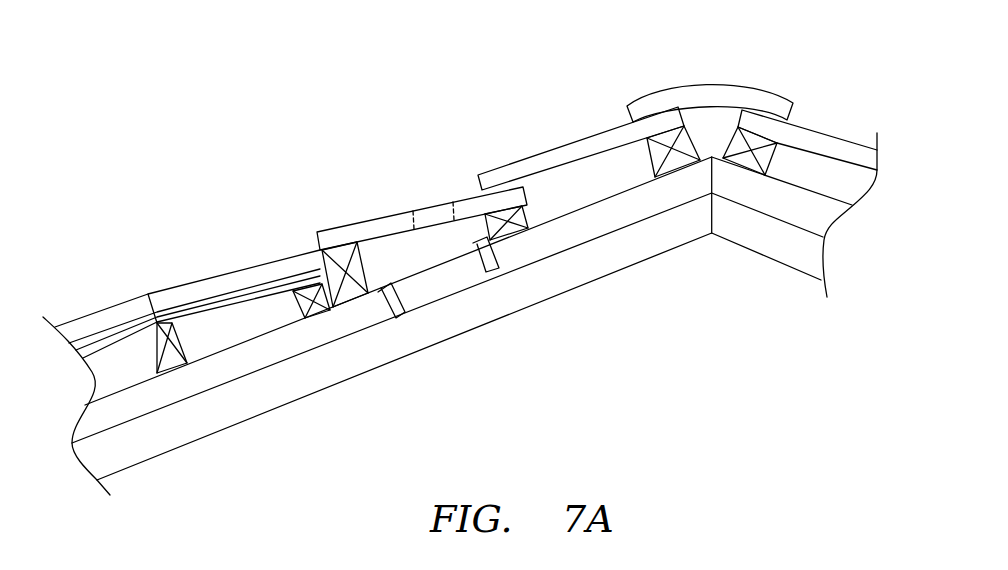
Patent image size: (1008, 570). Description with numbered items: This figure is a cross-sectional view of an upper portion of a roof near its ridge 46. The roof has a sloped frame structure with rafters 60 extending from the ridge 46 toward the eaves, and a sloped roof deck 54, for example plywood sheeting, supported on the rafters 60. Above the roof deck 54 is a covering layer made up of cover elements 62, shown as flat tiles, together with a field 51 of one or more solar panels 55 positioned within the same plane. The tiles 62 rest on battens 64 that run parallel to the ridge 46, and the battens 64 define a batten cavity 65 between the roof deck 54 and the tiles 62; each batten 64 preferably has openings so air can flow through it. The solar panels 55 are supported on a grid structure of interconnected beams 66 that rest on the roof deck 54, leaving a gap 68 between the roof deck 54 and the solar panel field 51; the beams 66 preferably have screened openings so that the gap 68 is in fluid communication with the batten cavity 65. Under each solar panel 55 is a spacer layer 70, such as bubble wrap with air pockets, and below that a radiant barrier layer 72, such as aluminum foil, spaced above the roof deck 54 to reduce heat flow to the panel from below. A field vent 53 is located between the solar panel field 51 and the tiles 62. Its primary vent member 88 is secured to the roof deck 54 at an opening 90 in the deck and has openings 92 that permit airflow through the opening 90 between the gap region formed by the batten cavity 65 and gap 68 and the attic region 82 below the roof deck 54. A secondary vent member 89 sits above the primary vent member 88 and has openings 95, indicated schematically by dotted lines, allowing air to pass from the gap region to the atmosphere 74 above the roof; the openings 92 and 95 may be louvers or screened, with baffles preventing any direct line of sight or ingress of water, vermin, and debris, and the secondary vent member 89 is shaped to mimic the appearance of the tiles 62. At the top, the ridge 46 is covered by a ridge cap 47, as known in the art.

The ridge 46 is at (682, 95).
The ridge cap 47 is at (744, 98).
The field of solar panels 51 is at (282, 274).
The field vent 53 is at (422, 229).
The roof deck 54 is at (463, 314).
The solar panel 55 is at (187, 287).
The rafter 60 is at (785, 247).
The cover element 62 is at (550, 163).
The batten 64 is at (668, 143).
The batten cavity 65 is at (600, 190).
The beam 66 is at (315, 282).
The gap 68 is at (233, 340).
The spacer layer 70 is at (222, 295).
The radiant barrier layer 72 is at (268, 292).
The atmosphere 74 is at (270, 82).
The region below the roof deck 82 is at (695, 350).
The primary vent member 88 is at (480, 267).
The secondary vent member 89 is at (422, 197).
The opening in the roof deck 90 is at (497, 262).
The openings of the primary vent member 92 is at (392, 277).
The openings of the secondary vent member 95 is at (427, 212).